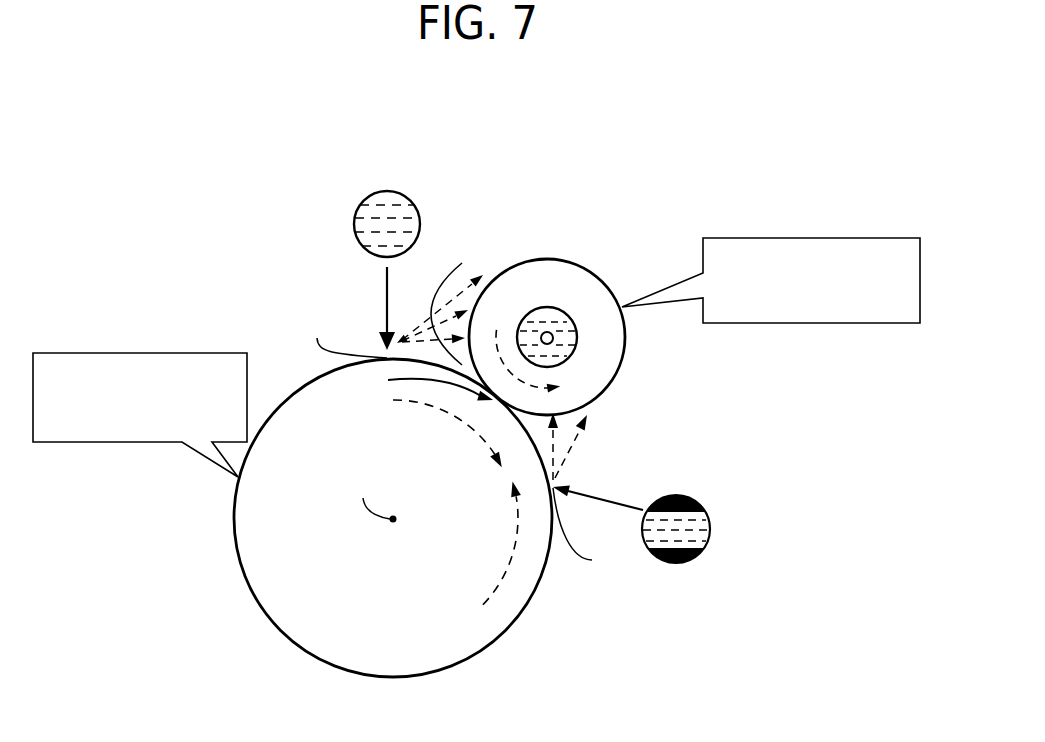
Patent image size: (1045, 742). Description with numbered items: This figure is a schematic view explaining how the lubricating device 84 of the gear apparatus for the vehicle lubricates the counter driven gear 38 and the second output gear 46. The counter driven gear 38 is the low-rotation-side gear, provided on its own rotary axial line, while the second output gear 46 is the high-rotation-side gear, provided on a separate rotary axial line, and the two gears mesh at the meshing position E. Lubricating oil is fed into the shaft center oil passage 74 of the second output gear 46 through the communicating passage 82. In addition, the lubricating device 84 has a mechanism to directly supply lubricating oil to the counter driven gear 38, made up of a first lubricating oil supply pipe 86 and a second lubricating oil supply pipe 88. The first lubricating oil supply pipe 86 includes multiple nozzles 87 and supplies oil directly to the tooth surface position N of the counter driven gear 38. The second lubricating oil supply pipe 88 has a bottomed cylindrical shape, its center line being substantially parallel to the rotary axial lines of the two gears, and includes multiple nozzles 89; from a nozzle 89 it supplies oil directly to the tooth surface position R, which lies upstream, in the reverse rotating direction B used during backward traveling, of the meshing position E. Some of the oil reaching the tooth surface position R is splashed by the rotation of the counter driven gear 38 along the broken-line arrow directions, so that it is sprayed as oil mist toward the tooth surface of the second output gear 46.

The lubricating device 84 is at (565, 108).
The counter driven gear 38 is at (313, 635).
The second output gear 46 is at (600, 382).
The shaft center oil passage 74 is at (568, 353).
The communicating passage 82 is at (569, 338).
The first lubricating oil supply pipe 86 is at (413, 202).
The nozzle 87 is at (373, 255).
The second lubricating oil supply pipe 88 is at (693, 500).
The nozzle 89 is at (645, 531).